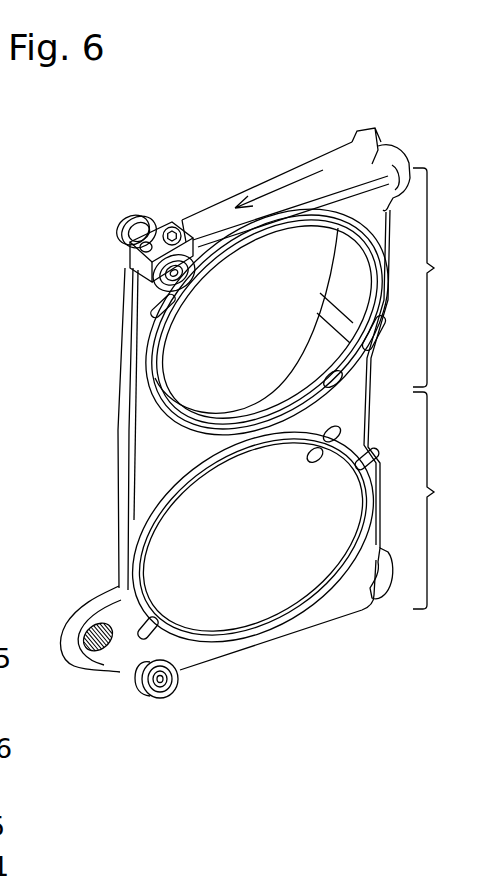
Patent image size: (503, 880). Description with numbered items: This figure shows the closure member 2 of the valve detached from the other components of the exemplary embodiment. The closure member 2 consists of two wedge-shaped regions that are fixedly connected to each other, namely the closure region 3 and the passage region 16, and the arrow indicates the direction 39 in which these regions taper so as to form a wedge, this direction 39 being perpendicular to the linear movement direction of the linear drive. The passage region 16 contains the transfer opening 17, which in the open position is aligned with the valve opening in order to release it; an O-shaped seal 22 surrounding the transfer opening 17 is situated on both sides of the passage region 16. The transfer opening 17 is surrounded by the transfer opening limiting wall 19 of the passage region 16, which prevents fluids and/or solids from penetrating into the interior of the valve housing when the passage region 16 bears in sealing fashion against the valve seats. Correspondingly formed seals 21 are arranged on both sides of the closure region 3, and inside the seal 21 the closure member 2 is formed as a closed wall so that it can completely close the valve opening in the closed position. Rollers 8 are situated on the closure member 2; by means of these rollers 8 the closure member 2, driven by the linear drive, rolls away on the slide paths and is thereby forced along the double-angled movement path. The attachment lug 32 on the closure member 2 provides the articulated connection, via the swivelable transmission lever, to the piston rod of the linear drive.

The closure member 2 is at (340, 168).
The closure region 3 is at (436, 500).
The rollers 8 is at (133, 218).
The passage region 16 is at (443, 277).
The transfer opening 17 is at (203, 363).
The transfer opening limiting wall 19 is at (247, 402).
The seals 21 is at (327, 595).
The O-shaped seal 22 is at (232, 242).
The attachment lug 32 is at (90, 658).
The direction 39 is at (278, 190).